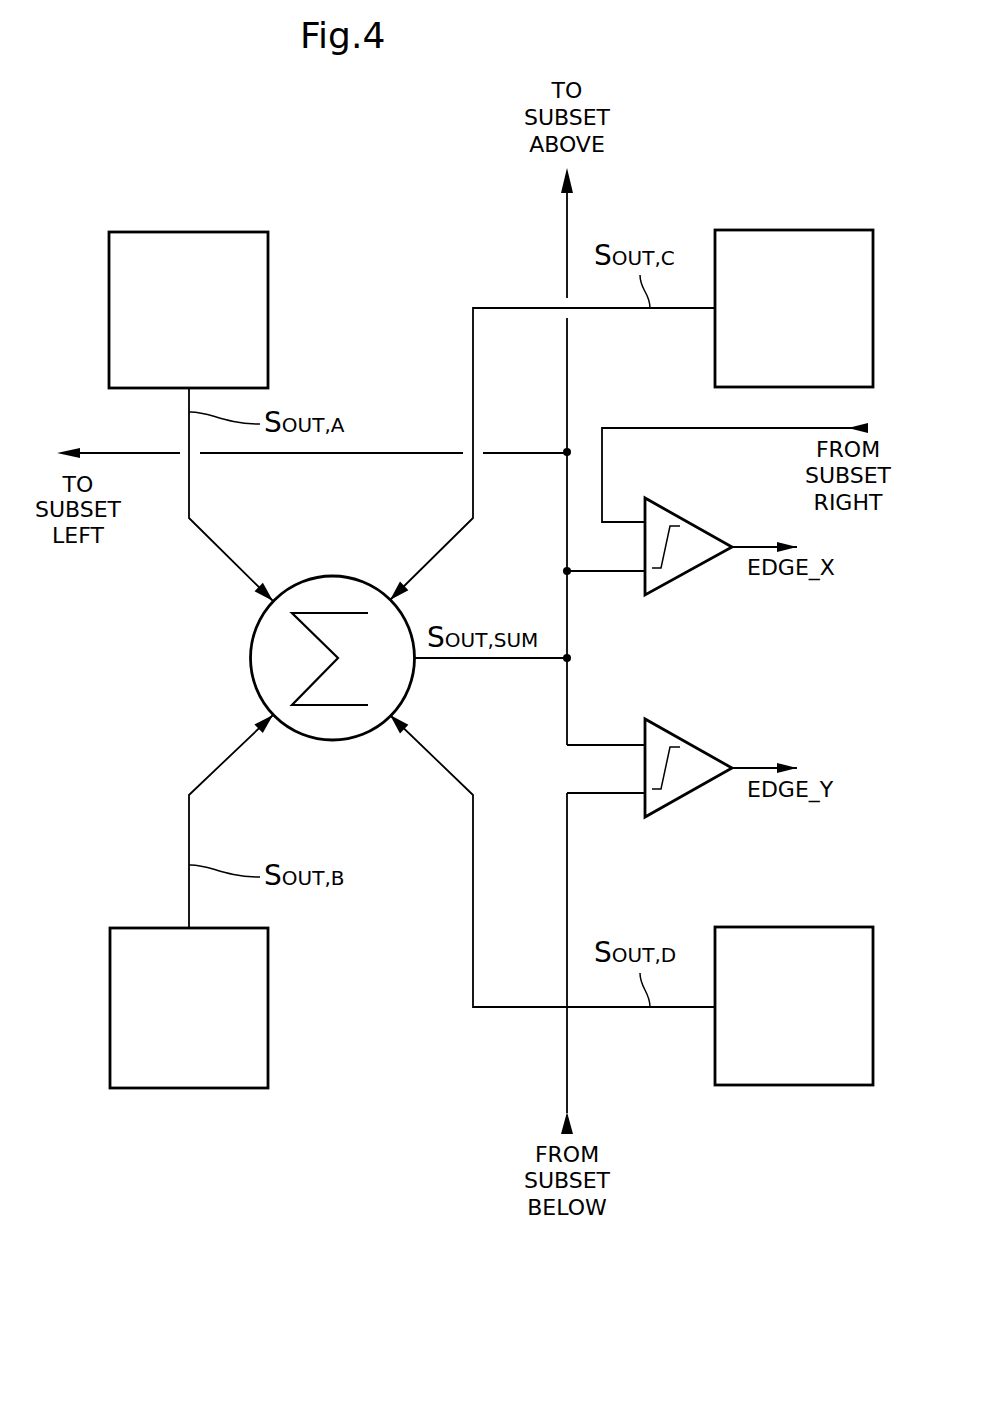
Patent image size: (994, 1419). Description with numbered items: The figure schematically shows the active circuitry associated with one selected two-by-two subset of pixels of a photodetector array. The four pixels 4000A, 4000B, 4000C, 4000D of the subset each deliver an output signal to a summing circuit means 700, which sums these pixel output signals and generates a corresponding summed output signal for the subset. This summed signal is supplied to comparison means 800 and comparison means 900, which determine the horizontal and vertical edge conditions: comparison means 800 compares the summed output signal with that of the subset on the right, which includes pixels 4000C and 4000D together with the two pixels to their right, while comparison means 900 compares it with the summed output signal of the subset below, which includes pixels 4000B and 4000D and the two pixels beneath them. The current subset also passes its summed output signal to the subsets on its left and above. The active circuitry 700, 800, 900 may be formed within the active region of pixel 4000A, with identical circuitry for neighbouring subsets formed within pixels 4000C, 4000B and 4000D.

The pixel 4000A is at (188, 232).
The pixel 4000B is at (189, 1088).
The pixel 4000C is at (795, 230).
The pixel 4000D is at (795, 1085).
The summing circuit means 700 is at (250, 658).
The comparison means 800 is at (704, 525).
The comparison means 900 is at (704, 746).